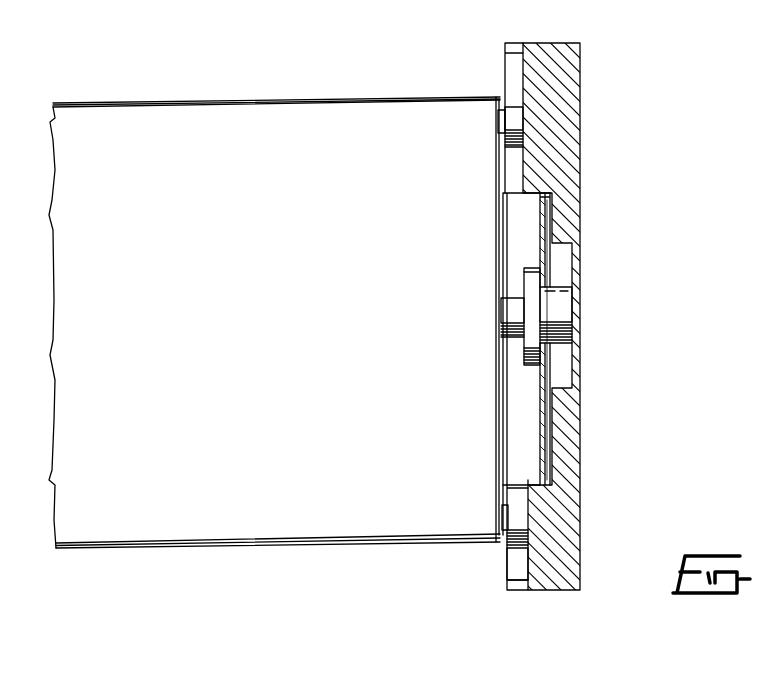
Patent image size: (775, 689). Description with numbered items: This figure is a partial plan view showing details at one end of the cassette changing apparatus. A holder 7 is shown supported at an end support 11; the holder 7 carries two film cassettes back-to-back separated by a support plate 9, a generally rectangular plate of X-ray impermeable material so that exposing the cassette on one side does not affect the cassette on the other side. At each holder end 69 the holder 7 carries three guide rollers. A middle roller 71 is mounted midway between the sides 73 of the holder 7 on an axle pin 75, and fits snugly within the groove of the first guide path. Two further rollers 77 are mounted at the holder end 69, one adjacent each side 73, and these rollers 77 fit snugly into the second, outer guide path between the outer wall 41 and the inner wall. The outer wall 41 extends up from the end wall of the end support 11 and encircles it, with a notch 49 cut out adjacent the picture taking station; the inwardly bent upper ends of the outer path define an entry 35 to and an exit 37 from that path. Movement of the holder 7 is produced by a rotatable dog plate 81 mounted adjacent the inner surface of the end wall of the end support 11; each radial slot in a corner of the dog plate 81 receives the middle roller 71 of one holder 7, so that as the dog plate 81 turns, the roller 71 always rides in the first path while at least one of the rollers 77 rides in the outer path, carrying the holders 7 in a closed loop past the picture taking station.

The holder 7 is at (233, 101).
The support plate 9 is at (167, 505).
The end support 11 is at (581, 68).
The entry 35 is at (509, 197).
The exit 37 is at (534, 485).
The outer wall 41 is at (556, 146).
The notch 49 is at (550, 453).
The holder end 69 is at (510, 230).
The middle roller 71 is at (549, 288).
The side of holder 73 is at (351, 77).
The axle pin 75 is at (513, 298).
The roller 77 is at (507, 85).
The dog plate 81 is at (543, 217).